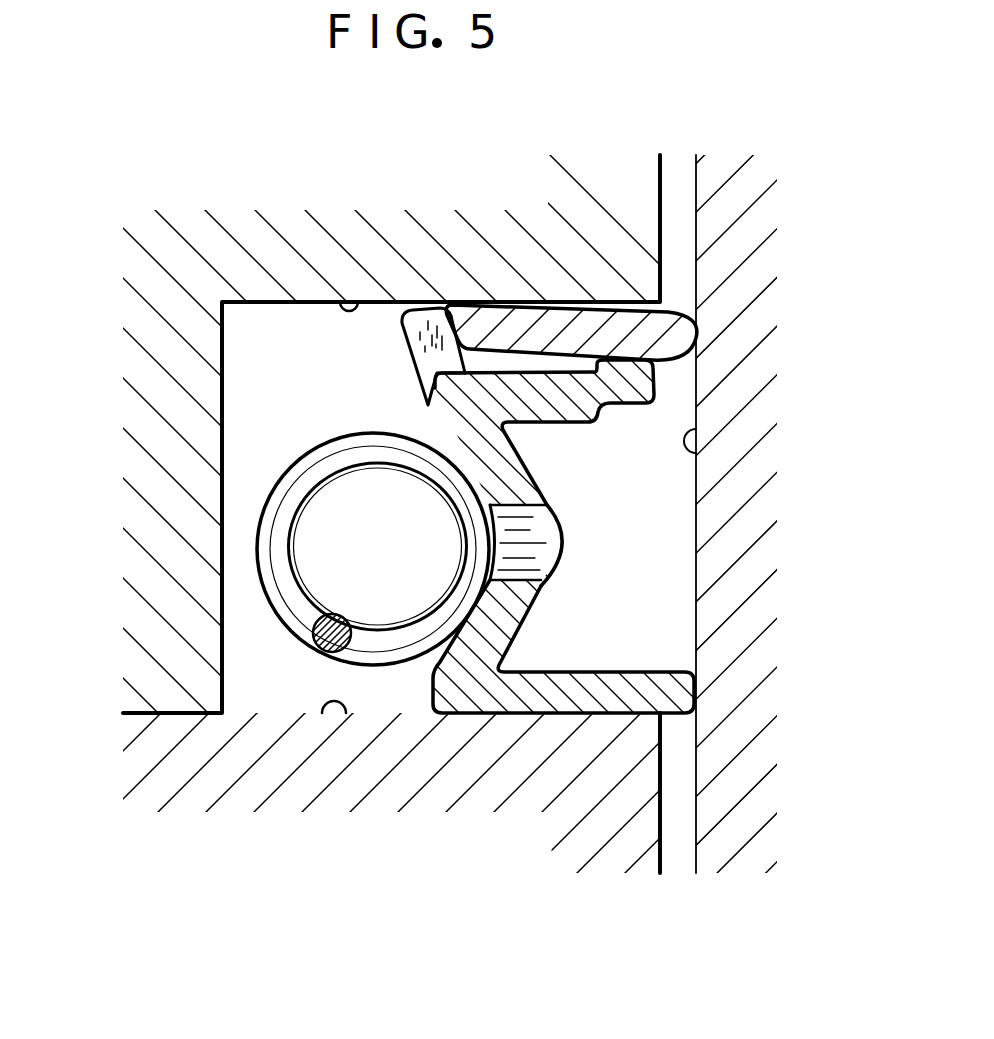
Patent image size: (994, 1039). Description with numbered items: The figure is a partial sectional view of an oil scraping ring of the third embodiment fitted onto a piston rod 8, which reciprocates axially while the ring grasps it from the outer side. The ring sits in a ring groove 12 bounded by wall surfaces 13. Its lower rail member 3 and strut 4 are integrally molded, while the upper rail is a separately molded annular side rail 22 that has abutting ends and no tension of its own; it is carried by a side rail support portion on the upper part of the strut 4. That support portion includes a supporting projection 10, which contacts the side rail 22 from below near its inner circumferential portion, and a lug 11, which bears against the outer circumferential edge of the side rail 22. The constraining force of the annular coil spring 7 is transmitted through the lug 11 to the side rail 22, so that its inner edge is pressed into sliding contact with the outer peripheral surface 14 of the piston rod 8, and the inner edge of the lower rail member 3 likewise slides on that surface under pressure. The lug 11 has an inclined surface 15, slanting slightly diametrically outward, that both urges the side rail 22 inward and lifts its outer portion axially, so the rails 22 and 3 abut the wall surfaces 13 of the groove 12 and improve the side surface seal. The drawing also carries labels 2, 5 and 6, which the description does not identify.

The cylinder 2 is at (677, 313).
The lower rail member 3 is at (602, 690).
The strut 4 is at (507, 607).
The sliding surface 5 is at (537, 530).
The spring seating groove 6 is at (497, 543).
The annular coil spring 7 is at (268, 505).
The piston rod 8 is at (821, 541).
The supporting projection 10 is at (653, 374).
The lug 11 is at (417, 338).
The ring groove 12 is at (248, 405).
The wall surfaces 13 is at (339, 303).
The outer peripheral surface 14 is at (700, 453).
The inclined surface 15 is at (453, 358).
The side rail 22 is at (538, 325).